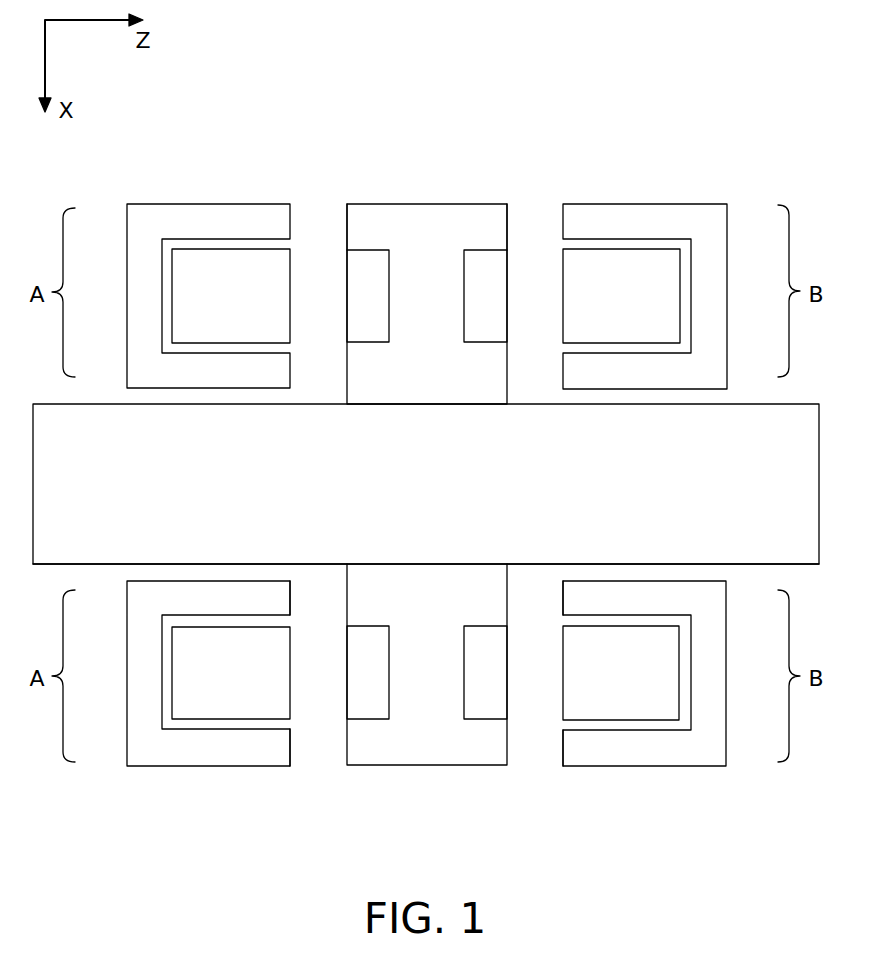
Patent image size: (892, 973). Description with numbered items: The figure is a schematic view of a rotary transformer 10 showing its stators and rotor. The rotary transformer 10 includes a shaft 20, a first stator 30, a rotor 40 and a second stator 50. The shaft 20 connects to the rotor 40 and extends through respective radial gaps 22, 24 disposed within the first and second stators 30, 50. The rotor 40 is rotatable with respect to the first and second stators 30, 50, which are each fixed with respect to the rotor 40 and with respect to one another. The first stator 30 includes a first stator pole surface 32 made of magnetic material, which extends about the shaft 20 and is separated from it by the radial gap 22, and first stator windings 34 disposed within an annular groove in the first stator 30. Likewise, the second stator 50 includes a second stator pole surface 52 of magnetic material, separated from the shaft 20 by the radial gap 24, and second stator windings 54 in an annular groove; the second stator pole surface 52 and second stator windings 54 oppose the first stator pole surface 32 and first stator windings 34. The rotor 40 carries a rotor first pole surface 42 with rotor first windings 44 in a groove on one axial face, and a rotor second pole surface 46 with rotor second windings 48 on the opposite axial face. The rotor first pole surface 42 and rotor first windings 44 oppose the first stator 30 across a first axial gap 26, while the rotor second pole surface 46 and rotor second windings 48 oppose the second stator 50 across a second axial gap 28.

The rotary transformer 10 is at (150, 832).
The shaft 20 is at (98, 549).
The radial gap 22 is at (221, 573).
The radial gap 24 is at (633, 573).
The first axial gap 26 is at (305, 308).
The second axial gap 28 is at (522, 308).
The first stator 30 is at (213, 175).
The first stator pole surface 32 is at (292, 585).
The first stator windings 34 is at (231, 248).
The rotor 40 is at (428, 173).
The rotor first pole surface 42 is at (340, 216).
The rotor first windings 44 is at (367, 316).
The rotor second pole surface 46 is at (513, 216).
The rotor second windings 48 is at (482, 283).
The second stator 50 is at (646, 172).
The second stator pole surface 52 is at (563, 585).
The second stator windings 54 is at (623, 248).